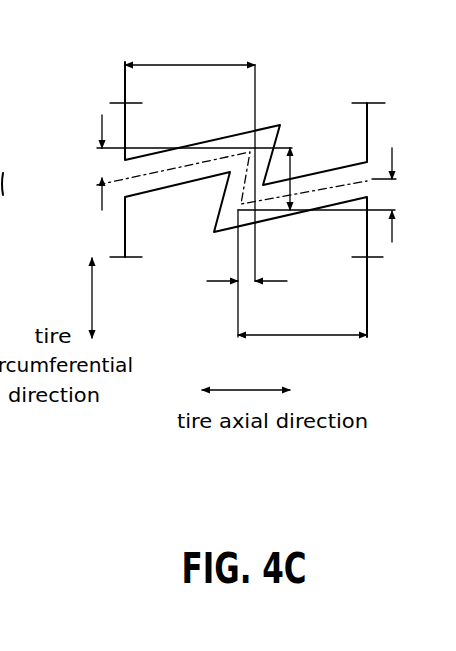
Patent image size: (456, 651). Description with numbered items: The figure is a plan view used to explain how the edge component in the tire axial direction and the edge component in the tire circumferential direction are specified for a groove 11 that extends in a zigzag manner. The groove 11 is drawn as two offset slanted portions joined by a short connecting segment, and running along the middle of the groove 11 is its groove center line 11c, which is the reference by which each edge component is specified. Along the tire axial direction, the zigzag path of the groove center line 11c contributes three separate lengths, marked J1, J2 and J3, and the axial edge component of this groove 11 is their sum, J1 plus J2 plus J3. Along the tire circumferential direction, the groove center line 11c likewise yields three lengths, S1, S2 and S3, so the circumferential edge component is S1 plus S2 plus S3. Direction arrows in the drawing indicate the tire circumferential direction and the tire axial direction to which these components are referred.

The groove 11 is at (327, 117).
The groove center line 11c is at (190, 168).
The edge component in the tire axial direction J1 is at (190, 160).
The edge component in the tire axial direction J2 is at (247, 273).
The edge component in the tire axial direction J3 is at (302, 350).
The edge component in the tire circumferential direction S1 is at (177, 162).
The edge component in the tire circumferential direction S2 is at (300, 163).
The edge component in the tire circumferential direction S3 is at (402, 195).